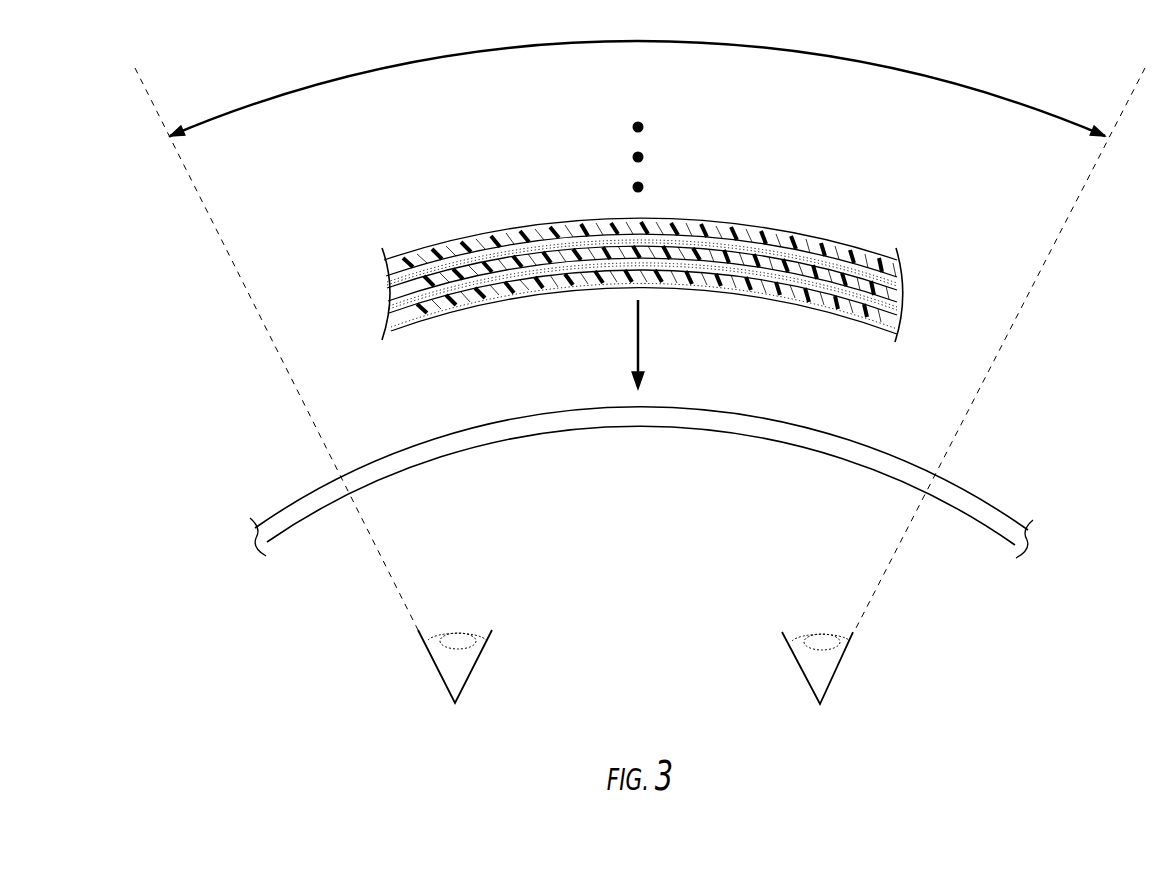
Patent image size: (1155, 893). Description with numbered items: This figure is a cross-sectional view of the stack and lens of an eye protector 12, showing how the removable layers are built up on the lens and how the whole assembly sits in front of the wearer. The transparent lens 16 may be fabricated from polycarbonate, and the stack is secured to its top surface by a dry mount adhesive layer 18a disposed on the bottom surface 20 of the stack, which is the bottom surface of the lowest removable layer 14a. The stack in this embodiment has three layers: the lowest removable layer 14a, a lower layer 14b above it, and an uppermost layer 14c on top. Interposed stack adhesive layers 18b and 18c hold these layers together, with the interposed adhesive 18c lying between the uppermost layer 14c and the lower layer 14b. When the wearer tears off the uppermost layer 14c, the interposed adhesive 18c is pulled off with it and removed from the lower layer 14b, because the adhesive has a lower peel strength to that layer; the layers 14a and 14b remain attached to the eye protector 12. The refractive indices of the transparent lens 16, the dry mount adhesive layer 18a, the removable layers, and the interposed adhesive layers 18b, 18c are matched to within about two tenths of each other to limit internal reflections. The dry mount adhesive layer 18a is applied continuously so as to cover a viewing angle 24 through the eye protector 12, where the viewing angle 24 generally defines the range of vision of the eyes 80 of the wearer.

The eye protector 12 is at (1048, 499).
The lowest removable layer 14a is at (386, 316).
The lower layer 14b is at (380, 285).
The uppermost layer 14c is at (396, 257).
The transparent lens 16 is at (972, 505).
The dry mount adhesive layer 18a is at (436, 330).
The interposed stack adhesive layer 18b is at (383, 301).
The interposed adhesive layer 18c is at (380, 278).
The bottom surface 20 is at (576, 282).
The viewing angle 24 is at (283, 90).
The eyes 80 is at (463, 670).